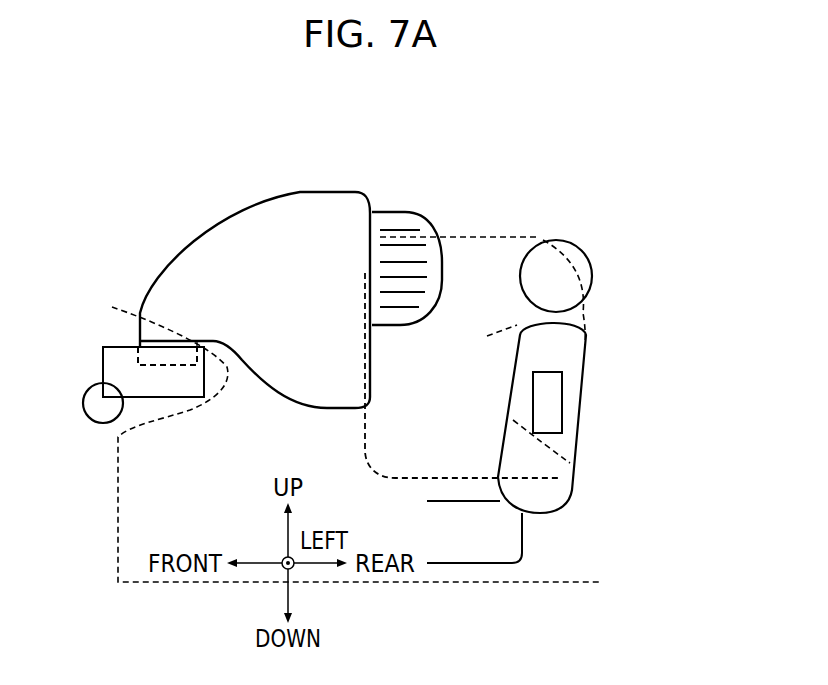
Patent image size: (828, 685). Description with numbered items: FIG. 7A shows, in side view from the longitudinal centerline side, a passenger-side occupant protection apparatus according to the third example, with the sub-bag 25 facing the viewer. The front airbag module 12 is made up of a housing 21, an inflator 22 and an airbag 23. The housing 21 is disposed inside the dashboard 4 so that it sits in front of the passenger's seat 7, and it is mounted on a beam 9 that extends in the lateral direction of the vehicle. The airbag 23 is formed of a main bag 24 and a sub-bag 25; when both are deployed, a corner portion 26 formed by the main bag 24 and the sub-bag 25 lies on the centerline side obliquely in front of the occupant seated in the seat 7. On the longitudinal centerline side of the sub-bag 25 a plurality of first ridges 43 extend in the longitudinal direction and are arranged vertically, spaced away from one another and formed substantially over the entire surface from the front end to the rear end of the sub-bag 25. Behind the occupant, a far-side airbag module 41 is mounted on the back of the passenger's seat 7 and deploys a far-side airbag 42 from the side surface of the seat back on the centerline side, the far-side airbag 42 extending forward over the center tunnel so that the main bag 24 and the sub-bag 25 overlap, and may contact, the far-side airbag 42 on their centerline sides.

The front airbag module 12 is at (123, 108).
The housing 21 is at (122, 347).
The inflator 22 is at (177, 343).
The airbag 23 is at (255, 152).
The main bag 24 is at (270, 217).
The sub-bag 25 is at (408, 222).
The first ridges 43 is at (403, 265).
The far-side airbag 42 is at (598, 283).
The far-side airbag module 41 is at (540, 395).
The corner portion 26 is at (380, 338).
The passenger's seat 7 is at (545, 511).
The dashboard 4 is at (158, 432).
The beam 9 is at (95, 423).